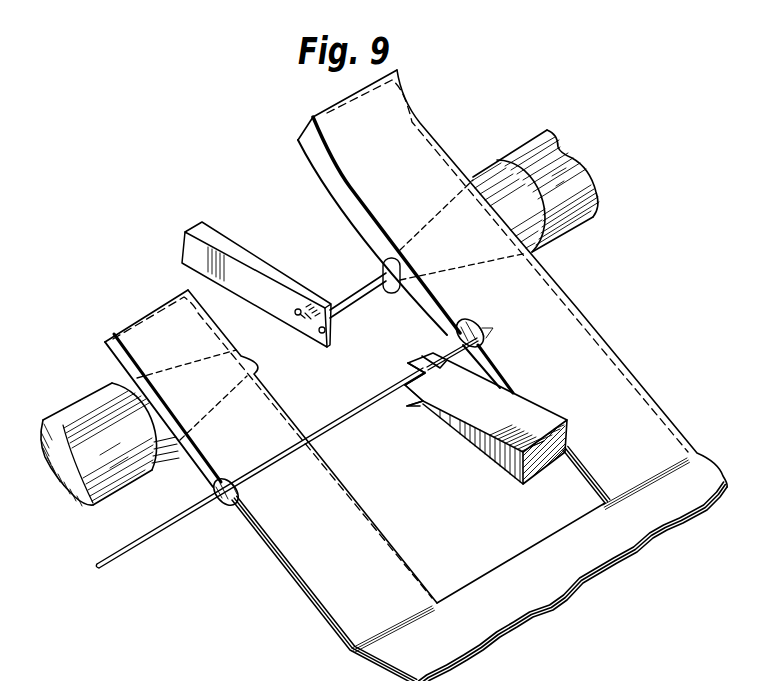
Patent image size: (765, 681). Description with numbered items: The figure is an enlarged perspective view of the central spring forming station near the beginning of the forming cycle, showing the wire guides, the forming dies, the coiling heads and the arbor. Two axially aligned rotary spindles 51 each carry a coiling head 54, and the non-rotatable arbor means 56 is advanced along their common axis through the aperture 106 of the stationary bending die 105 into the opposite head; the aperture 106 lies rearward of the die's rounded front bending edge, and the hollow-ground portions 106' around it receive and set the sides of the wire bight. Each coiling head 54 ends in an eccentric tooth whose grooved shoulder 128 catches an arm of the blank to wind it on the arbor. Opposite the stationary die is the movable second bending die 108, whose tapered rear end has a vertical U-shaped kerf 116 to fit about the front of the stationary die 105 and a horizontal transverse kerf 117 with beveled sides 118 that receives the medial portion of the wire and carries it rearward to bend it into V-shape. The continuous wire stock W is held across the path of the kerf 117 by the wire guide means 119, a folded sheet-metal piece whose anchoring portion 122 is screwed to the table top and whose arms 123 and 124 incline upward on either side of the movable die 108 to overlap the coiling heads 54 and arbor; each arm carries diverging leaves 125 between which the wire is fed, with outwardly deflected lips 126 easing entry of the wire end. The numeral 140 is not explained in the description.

The rotary spindle 51 is at (63, 420).
The coiling head 54 is at (176, 458).
The arbor means 56 is at (352, 294).
The stationary bending die 105 is at (223, 237).
The aperture 106 is at (316, 311).
The hollow-ground portions 106' is at (313, 281).
The movable second bending die 108 is at (481, 452).
The vertical U-shaped kerf 116 is at (443, 342).
The horizontal transverse U-shaped kerf 117 is at (401, 383).
The beveled or relieved sides 118 is at (414, 400).
The wire guide means 119 is at (407, 530).
The anchoring portion 122 is at (483, 578).
The arm of wire guide 123 is at (265, 540).
The arm of wire guide 124 is at (579, 306).
The leaves 125 is at (334, 177).
The lips 126 is at (487, 333).
The grooved shoulder 128 is at (415, 266).
The wire stock W is at (131, 550).
The member 140 is at (119, 677).